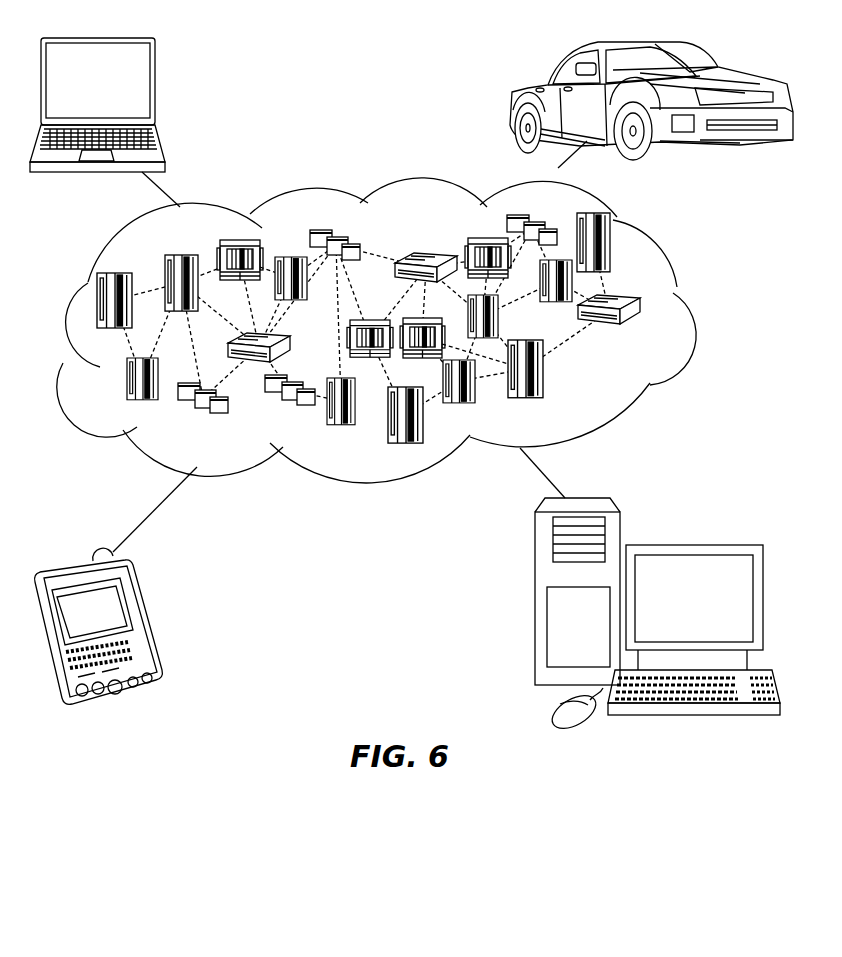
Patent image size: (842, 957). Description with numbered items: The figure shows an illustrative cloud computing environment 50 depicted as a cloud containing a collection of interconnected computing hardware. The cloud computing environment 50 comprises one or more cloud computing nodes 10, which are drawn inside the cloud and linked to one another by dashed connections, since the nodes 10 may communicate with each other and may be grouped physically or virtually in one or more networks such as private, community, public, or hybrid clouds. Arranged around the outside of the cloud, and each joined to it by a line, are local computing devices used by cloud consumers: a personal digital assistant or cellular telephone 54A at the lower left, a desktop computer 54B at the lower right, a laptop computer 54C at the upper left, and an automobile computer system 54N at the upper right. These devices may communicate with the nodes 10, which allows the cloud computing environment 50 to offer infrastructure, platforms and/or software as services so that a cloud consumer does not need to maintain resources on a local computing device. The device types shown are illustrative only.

The cloud computing environment 50 is at (692, 307).
The cloud computing node 10 is at (650, 337).
The personal digital assistant or cellular telephone 54A is at (150, 623).
The desktop computer 54B is at (690, 543).
The laptop computer 54C is at (157, 86).
The automobile computer system 54N is at (512, 98).